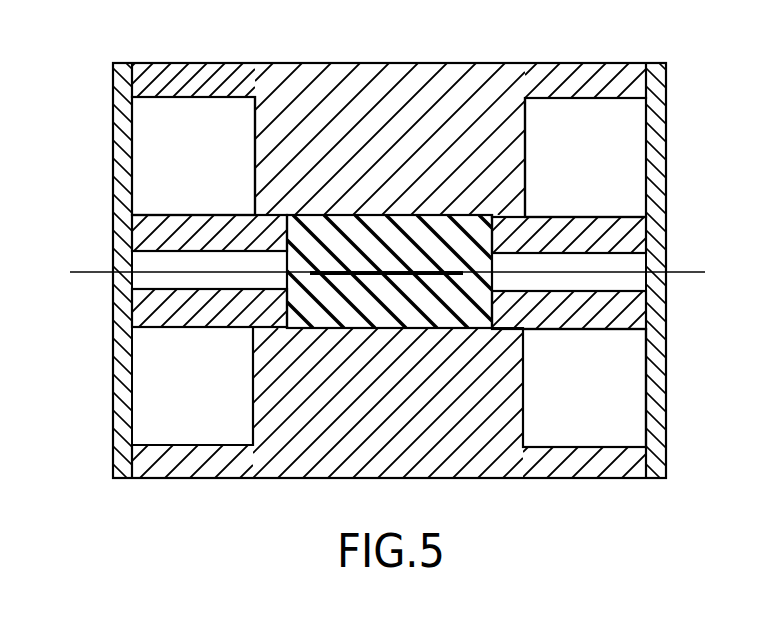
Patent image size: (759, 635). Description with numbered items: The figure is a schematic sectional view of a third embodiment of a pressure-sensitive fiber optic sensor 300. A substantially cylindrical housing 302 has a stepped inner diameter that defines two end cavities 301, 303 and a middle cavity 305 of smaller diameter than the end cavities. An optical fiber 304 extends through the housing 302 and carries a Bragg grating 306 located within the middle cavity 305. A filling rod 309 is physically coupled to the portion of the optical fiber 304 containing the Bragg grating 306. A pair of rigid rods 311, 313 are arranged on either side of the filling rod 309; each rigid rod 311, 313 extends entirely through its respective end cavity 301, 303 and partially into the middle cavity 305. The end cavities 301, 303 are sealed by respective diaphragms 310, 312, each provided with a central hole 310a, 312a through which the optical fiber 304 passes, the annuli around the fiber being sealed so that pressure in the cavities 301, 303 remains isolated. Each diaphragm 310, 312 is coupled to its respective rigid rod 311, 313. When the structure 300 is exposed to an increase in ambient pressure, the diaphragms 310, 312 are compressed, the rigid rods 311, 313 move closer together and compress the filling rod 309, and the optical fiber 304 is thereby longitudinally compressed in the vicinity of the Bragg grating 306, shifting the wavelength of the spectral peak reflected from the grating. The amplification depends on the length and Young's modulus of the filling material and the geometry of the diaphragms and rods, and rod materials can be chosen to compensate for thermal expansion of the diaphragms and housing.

The sensor 300 is at (224, 531).
The end cavity 301 is at (180, 117).
The housing 302 is at (259, 64).
The end cavity 303 is at (623, 125).
The optical fiber 304 is at (696, 275).
The middle cavity 305 is at (408, 328).
The Bragg grating 306 is at (323, 277).
The filling rod 309 is at (358, 225).
The diaphragm 310 is at (116, 138).
The central hole 310a is at (113, 273).
The rigid rod 311 is at (143, 310).
The diaphragm 312 is at (660, 168).
The central hole 312a is at (665, 273).
The rigid rod 313 is at (570, 329).